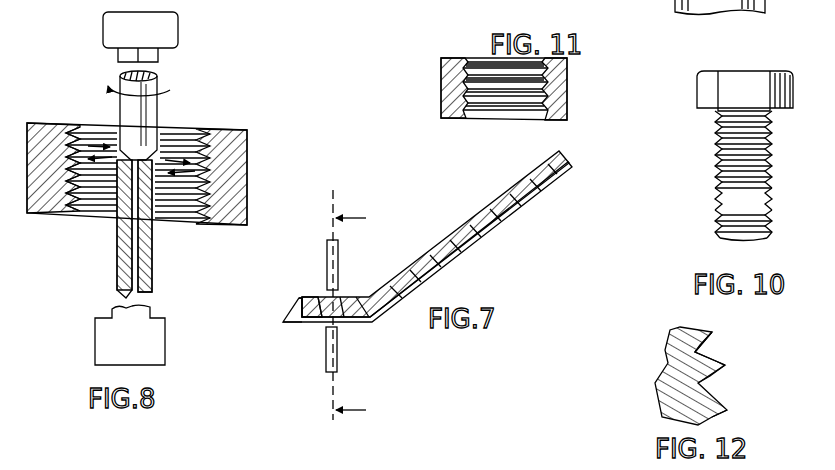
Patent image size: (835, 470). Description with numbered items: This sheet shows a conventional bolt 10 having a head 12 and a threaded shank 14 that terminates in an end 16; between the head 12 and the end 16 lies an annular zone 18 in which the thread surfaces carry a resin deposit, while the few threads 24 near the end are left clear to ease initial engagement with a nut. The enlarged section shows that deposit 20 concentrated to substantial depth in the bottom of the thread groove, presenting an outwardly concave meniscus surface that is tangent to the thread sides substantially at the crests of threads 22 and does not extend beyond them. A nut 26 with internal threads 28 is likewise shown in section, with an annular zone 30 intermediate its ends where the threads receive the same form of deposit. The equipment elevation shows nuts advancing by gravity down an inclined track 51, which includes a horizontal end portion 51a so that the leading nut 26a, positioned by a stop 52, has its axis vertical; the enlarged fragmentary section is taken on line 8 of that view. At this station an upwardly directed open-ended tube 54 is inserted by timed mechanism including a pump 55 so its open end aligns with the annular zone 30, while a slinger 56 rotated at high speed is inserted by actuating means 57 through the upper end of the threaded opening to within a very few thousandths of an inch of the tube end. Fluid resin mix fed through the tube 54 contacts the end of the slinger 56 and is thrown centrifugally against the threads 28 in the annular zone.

In FIG. 8, the actuating means 57 is at (178, 30).
In FIG. 8, the slinger 56 is at (158, 105).
In FIG. 7, the slinger 56 is at (338, 264).
In FIG. 8, the internal threads 28 is at (90, 126).
In FIG. 11, the internal threads 28 is at (484, 60).
In FIG. 8, the leading nut 26a is at (247, 178).
In FIG. 7, the leading nut 26a is at (308, 297).
In FIG. 8, the open-ended tube 54 is at (153, 262).
In FIG. 7, the open-ended tube 54 is at (337, 340).
In FIG. 8, the pump 55 is at (160, 341).
In FIG. 7, the section line 8— 8 is at (361, 307).
In FIG. 7, the stop 52 is at (297, 304).
In FIG. 7, the horizontal end portion 51a is at (300, 322).
In FIG. 7, the inclined track 51 is at (566, 176).
In FIG. 7, the nut 26 is at (452, 236).
In FIG. 11, the nut 26 is at (568, 90).
In FIG. 11, the annular zone 30 is at (490, 92).
In FIG. 10, the head 12 is at (697, 85).
In FIG. 10, the bolt 10 is at (775, 152).
In FIG. 10, the threaded shank 14 is at (716, 144).
In FIG. 10, the annular zone 18 is at (722, 194).
In FIG. 10, the few threads 24 is at (718, 228).
In FIG. 10, the end 16 is at (733, 240).
In FIG. 12, the crests of threads 22 is at (702, 360).
In FIG. 12, the resin deposit 20 is at (716, 384).